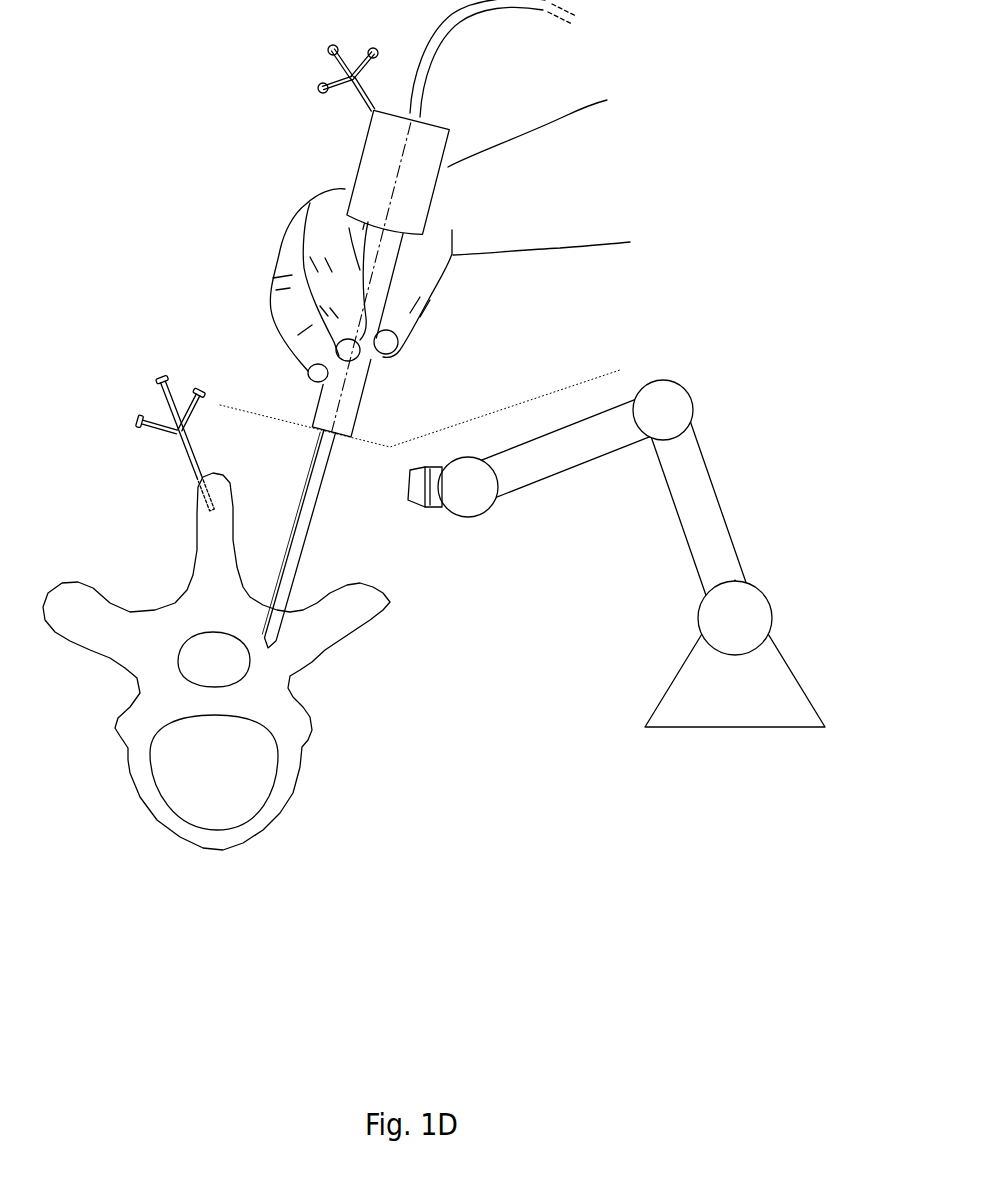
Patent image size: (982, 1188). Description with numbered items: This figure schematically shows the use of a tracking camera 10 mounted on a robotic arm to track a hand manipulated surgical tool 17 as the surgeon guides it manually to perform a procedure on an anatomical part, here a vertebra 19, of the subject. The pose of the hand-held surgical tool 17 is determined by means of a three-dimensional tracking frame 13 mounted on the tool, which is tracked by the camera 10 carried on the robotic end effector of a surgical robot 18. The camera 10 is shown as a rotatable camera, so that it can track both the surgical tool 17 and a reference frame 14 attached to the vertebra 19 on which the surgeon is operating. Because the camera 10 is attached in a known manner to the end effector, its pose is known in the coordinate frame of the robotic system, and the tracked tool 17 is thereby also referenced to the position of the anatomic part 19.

The tracking camera 10 is at (432, 510).
The three-dimensional tracking frame 13 is at (328, 72).
The reference frame 14 is at (157, 377).
The hand manipulated surgical tool 17 is at (307, 550).
The surgical robot 18 is at (700, 725).
The vertebra 19 is at (268, 827).